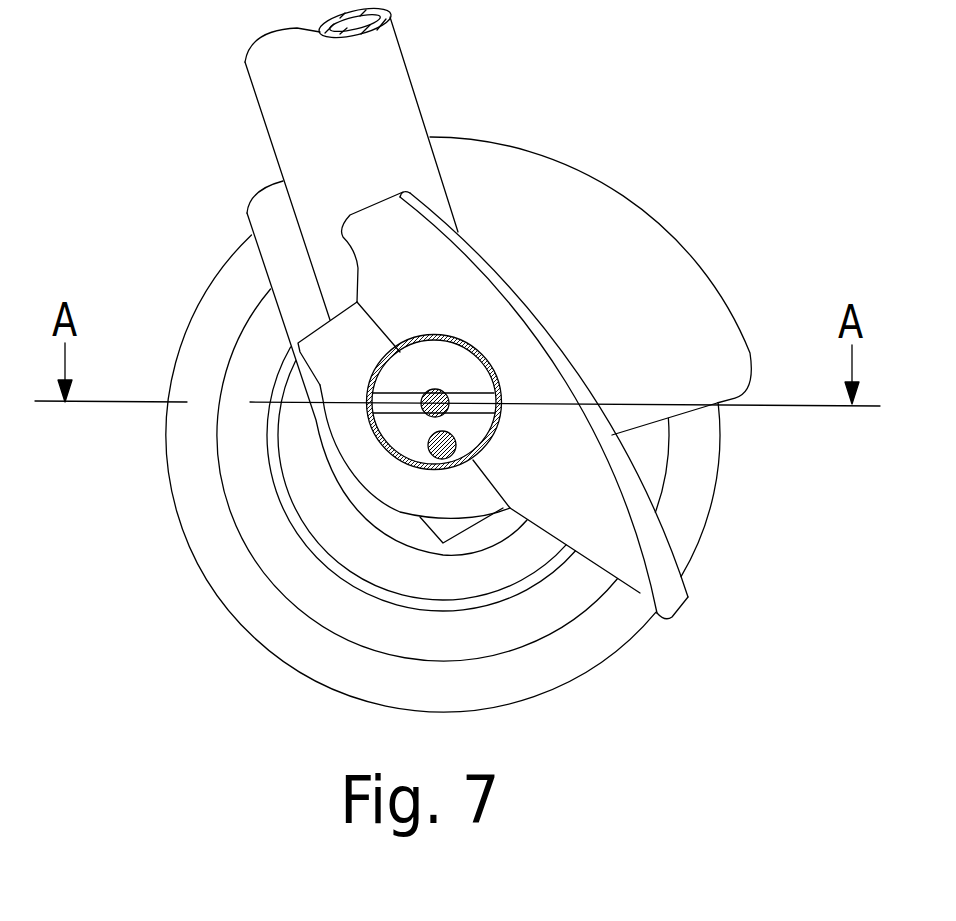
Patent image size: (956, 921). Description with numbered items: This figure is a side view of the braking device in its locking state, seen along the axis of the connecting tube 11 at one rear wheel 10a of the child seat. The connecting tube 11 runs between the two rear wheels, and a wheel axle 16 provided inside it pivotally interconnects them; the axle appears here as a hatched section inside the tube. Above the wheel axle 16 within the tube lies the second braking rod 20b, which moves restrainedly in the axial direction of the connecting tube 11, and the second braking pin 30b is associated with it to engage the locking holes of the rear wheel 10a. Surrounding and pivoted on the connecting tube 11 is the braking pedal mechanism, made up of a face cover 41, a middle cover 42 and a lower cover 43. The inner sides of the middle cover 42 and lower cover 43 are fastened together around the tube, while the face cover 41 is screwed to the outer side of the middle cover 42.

The rear wheel 10a is at (190, 498).
The connecting tube 11 is at (372, 374).
The wheel axle 16 is at (428, 450).
The second braking rod 20b is at (438, 393).
The second braking pin 30b is at (474, 402).
The face cover 41 is at (667, 533).
The middle cover 42 is at (338, 267).
The lower cover 43 is at (372, 506).